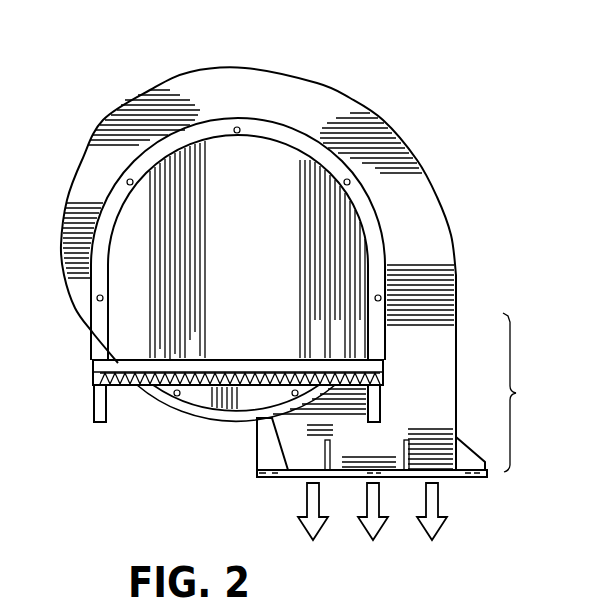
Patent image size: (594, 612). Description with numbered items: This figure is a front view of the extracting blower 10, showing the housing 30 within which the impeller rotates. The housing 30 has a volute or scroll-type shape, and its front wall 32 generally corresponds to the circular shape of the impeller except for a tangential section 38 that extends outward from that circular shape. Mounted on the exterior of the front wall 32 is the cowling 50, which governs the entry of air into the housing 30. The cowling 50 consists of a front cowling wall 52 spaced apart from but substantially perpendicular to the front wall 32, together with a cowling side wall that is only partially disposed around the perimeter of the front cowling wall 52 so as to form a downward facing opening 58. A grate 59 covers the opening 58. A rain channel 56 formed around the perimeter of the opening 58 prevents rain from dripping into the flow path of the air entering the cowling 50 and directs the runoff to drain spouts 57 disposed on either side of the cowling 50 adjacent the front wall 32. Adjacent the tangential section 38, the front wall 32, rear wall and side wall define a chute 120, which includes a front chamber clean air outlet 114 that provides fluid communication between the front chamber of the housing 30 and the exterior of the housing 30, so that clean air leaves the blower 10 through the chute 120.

The extracting blower 10 is at (248, 250).
The housing 30 is at (303, 77).
The front wall 32 is at (113, 143).
The cowling 50 is at (225, 180).
The front cowling wall 52 is at (140, 253).
The rain channel 56 is at (198, 417).
The drain spouts 57 is at (97, 402).
The downward facing opening 58 is at (133, 386).
The grate 59 is at (226, 385).
The tangential section 38 is at (516, 393).
The front chamber clean air outlet 114 is at (351, 478).
The chute 120 is at (397, 465).